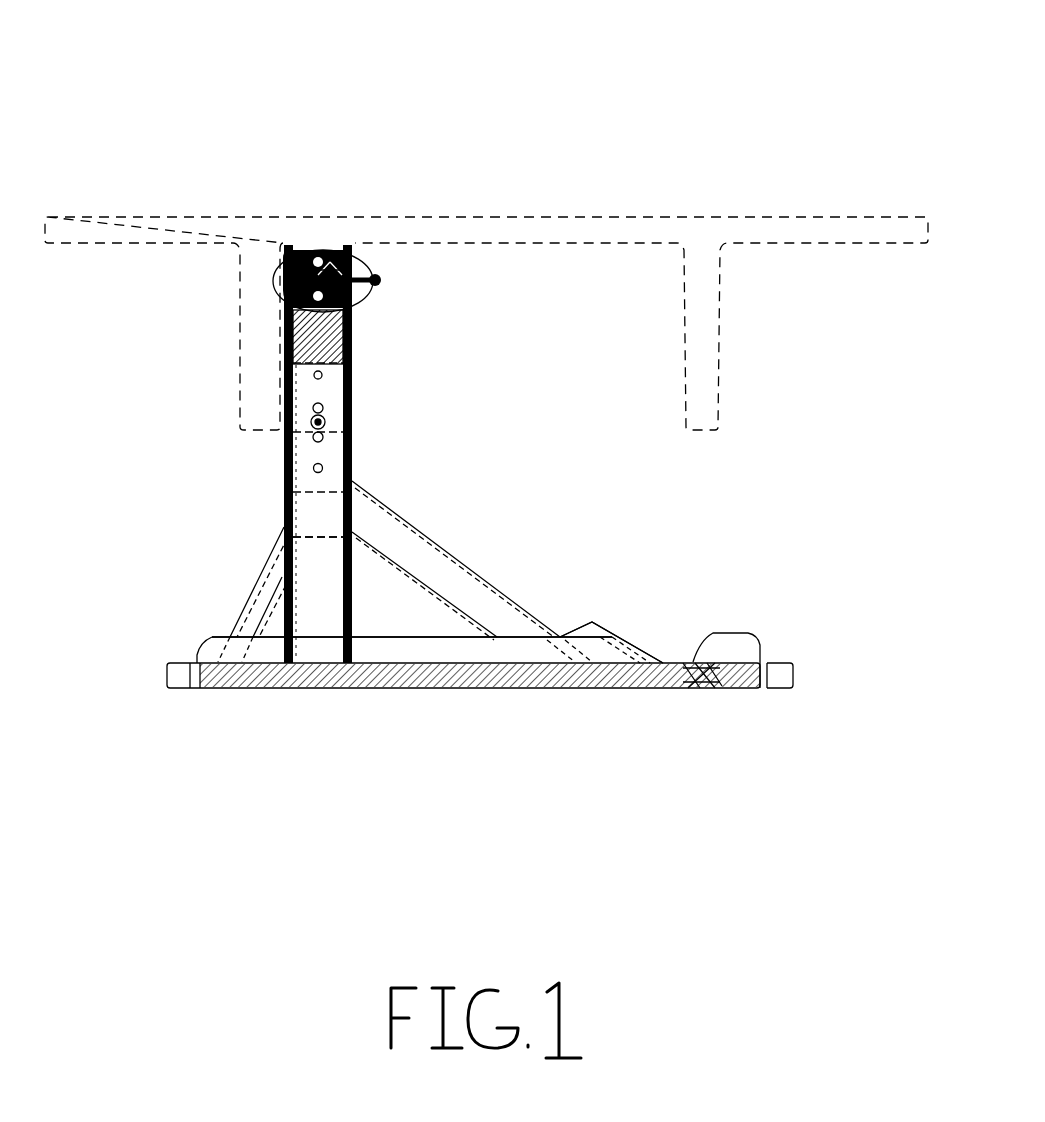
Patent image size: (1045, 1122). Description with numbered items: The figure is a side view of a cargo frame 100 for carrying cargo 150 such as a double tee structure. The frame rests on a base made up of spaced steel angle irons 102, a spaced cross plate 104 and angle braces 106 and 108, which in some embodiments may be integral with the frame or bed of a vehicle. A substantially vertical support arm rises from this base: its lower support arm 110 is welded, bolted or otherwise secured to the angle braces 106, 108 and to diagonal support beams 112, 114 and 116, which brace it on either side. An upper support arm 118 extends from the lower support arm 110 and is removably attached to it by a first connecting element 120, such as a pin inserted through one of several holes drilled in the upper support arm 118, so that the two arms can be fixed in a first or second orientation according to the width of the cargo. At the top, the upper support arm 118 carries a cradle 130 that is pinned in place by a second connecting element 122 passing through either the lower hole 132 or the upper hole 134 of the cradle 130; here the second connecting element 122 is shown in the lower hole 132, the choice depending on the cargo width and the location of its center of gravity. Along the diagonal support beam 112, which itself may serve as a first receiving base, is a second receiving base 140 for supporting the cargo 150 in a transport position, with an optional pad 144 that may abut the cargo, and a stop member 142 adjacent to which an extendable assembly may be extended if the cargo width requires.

The cargo frame 100 is at (148, 114).
The steel angle irons 102 is at (210, 690).
The cross plate 104 is at (420, 690).
The angle brace 106 is at (404, 653).
The angle brace 108 is at (412, 653).
The lower support arm 110 is at (352, 417).
The diagonal support beam 112 is at (405, 538).
The diagonal support beam 114 is at (280, 573).
The diagonal support beam 116 is at (318, 573).
The upper support arm 118 is at (352, 333).
The first connecting element 120 is at (352, 435).
The second connecting element 122 is at (330, 262).
The cradle 130 is at (362, 298).
The lower hole 132 is at (293, 304).
The upper hole 134 is at (294, 261).
The receiving base 140 is at (598, 625).
The stop member 142 is at (718, 633).
The pad 144 is at (582, 625).
The cargo 150 is at (767, 246).